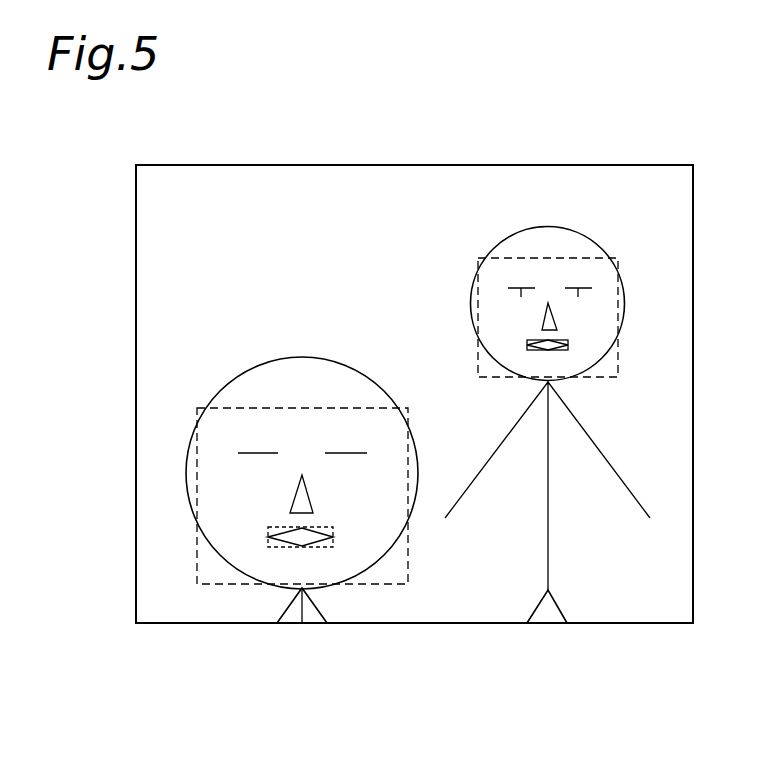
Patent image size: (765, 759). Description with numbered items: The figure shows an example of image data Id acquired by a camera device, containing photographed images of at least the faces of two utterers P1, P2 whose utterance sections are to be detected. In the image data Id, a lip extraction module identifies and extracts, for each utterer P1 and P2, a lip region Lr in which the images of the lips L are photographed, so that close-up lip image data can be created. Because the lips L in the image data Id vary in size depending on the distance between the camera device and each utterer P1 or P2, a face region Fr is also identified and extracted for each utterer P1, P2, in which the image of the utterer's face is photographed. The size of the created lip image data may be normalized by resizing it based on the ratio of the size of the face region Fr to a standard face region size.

The image data Id is at (136, 203).
The utterer P1 is at (580, 232).
The utterer P2 is at (262, 367).
The face region Fr is at (618, 358).
The lips L is at (568, 350).
The lip region Lr is at (527, 350).